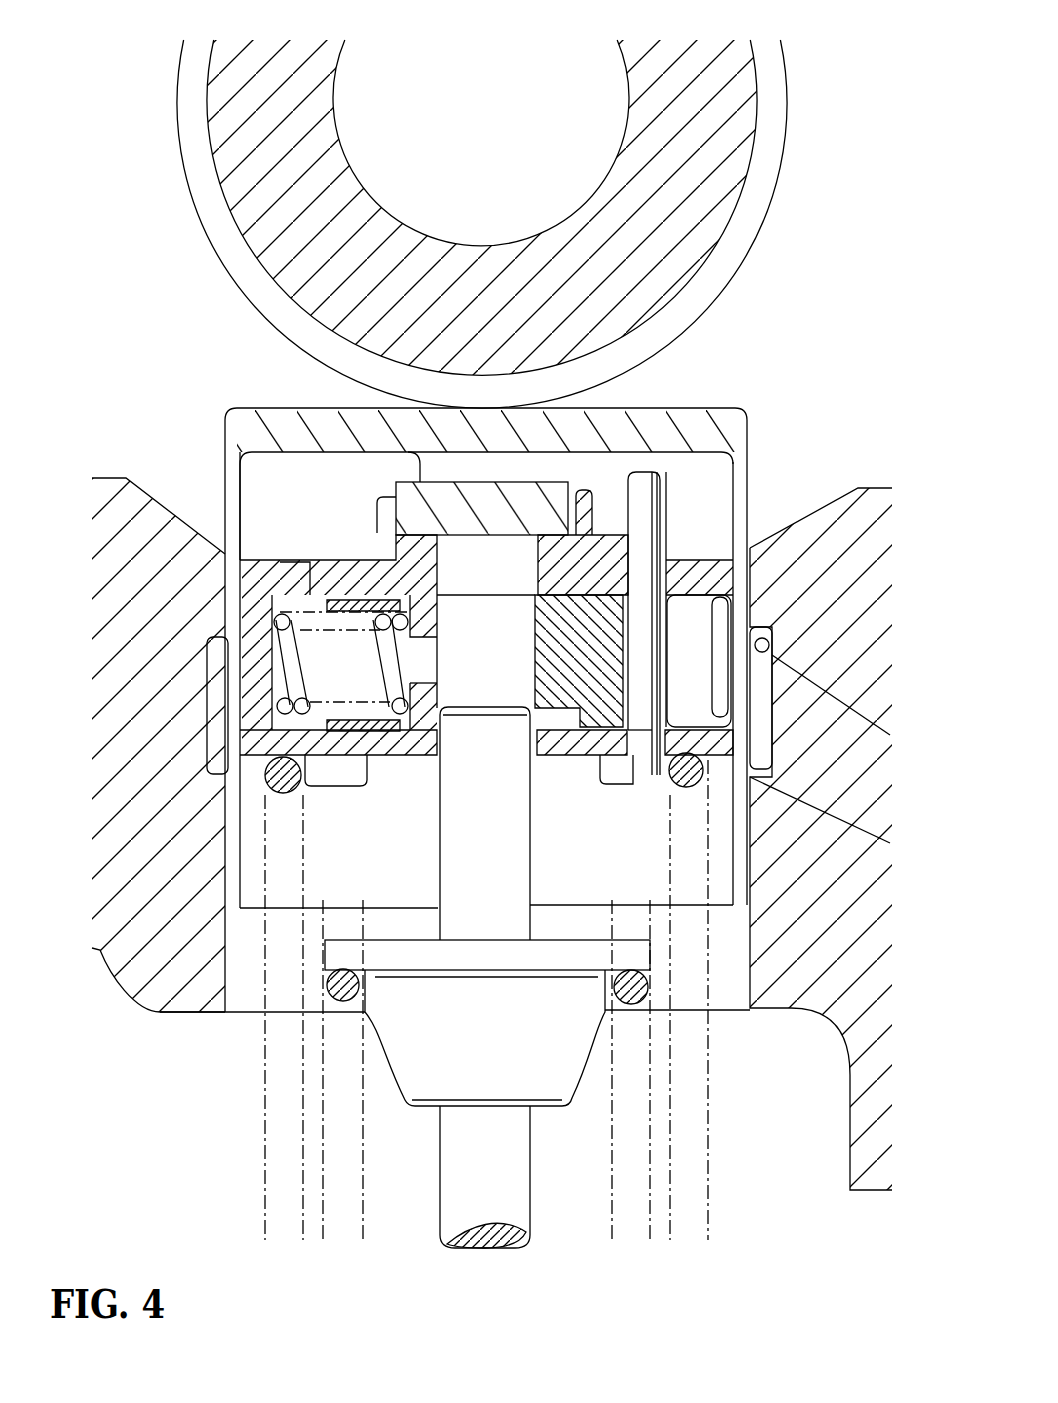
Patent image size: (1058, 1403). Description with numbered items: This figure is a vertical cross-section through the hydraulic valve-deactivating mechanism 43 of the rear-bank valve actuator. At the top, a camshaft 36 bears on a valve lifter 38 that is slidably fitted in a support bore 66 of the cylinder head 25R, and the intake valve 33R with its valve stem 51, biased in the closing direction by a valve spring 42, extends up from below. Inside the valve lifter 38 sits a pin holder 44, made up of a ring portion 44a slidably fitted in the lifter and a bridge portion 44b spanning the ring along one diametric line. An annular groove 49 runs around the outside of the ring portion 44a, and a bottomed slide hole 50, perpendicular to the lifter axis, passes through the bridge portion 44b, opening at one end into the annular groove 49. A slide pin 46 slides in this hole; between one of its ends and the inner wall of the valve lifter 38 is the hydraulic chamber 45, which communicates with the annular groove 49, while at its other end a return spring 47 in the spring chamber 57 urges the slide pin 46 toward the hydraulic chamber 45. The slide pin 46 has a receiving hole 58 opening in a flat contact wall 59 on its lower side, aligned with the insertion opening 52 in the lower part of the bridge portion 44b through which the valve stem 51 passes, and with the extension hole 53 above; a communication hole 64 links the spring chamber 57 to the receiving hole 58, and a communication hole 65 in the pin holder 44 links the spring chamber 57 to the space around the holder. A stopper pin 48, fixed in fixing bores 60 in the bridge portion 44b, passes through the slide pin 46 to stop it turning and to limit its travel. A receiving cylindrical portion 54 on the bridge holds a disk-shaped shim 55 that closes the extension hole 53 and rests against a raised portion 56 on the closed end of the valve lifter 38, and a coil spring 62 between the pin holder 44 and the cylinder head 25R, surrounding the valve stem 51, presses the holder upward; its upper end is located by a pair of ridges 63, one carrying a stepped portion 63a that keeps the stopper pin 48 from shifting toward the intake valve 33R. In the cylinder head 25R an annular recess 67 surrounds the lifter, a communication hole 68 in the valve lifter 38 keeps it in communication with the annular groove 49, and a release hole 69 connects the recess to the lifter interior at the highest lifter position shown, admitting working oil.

The camshaft 36 is at (703, 195).
The valve lifter 38 is at (698, 425).
The hydraulic valve-deactivating mechanism 43 is at (285, 465).
The pin holder 44 is at (285, 556).
The ring portion 44a is at (751, 838).
The bridge portion 44b is at (535, 582).
The hydraulic chamber 45 is at (690, 667).
The slide pin 46 is at (607, 553).
The return spring 47 is at (354, 757).
The stopper pin 48 is at (665, 475).
The annular groove 49 is at (748, 613).
The slide hole 50 is at (600, 742).
The valve stem 51 is at (460, 1142).
The insertion opening 52 is at (527, 742).
The extension hole 53 is at (570, 505).
The receiving cylindrical portion 54 is at (378, 520).
The shim 55 is at (550, 482).
The raised portion 56 is at (553, 470).
The spring chamber 57 is at (341, 778).
The receiving hole 58 is at (530, 678).
The contact wall 59 is at (572, 708).
The fixing bores 60 is at (748, 547).
The coil spring 62 is at (272, 778).
The ridges 63 is at (310, 810).
The stepped portion 63a is at (643, 760).
The communication hole 64 is at (427, 682).
The communication hole 65 is at (297, 578).
The support bore 66 is at (735, 948).
The annular recess 67 is at (821, 839).
The communication hole 68 is at (206, 680).
The release hole 69 is at (760, 760).
The valve spring 42 is at (640, 1010).
The cylinder head 25R is at (856, 490).
The intake valve 33R is at (534, 1200).